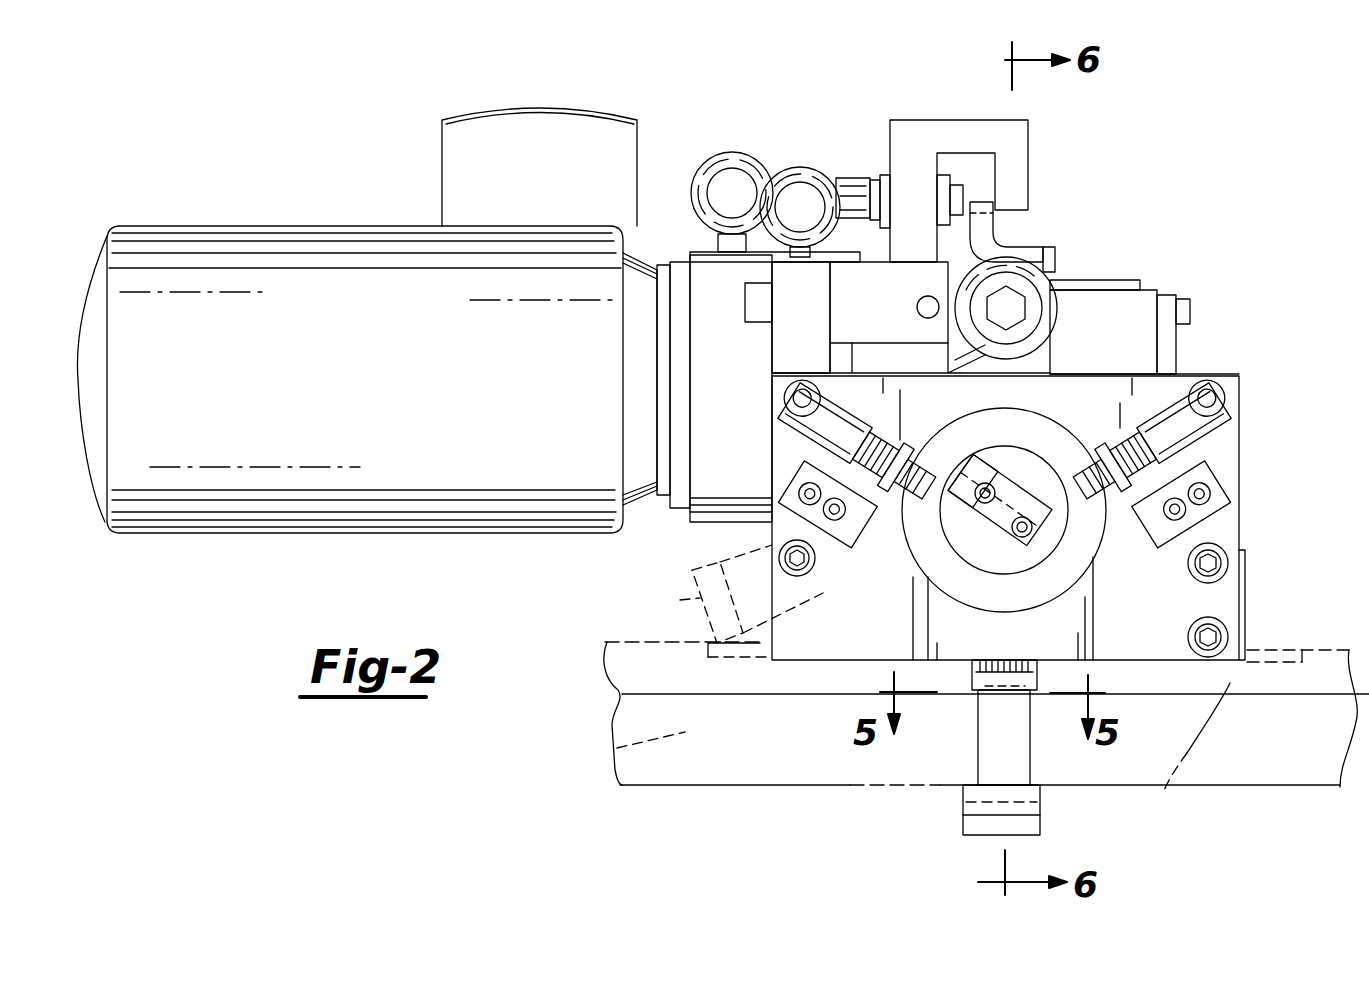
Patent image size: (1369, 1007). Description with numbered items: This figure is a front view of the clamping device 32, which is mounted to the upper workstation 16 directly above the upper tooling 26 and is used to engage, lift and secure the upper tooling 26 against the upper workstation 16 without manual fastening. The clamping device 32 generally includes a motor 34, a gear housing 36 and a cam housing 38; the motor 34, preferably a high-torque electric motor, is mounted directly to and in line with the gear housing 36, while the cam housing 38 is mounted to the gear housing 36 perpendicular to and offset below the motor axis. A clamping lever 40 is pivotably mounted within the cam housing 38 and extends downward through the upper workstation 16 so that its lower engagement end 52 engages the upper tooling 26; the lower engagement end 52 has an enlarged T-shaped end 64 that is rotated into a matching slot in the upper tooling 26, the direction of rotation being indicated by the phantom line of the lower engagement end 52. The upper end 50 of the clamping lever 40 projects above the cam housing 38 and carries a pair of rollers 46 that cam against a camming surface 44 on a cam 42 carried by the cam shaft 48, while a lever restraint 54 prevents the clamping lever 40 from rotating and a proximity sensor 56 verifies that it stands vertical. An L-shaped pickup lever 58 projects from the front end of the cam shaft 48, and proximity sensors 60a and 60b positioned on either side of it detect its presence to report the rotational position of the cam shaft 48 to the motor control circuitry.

The upper workstation 16 is at (1163, 795).
The upper tooling 26 is at (612, 748).
The clamping device 32 is at (262, 138).
The motor 34 is at (225, 533).
The gear housing 36 is at (1122, 311).
The cam housing 38 is at (1164, 390).
The clamping lever 40 is at (968, 742).
The cam 42 is at (1057, 366).
The camming surface 44 is at (1047, 362).
The rollers 46 is at (1052, 300).
The cam shaft 48 is at (1040, 550).
The upper end 50 is at (1040, 207).
The lower engagement end 52 is at (695, 598).
The lever restraint 54 is at (950, 133).
The proximity sensor 56 is at (848, 190).
The pickup lever 58 is at (960, 555).
The proximity sensor 60a is at (783, 432).
The proximity sensor 60b is at (1203, 423).
The T-shaped end 64 is at (965, 815).